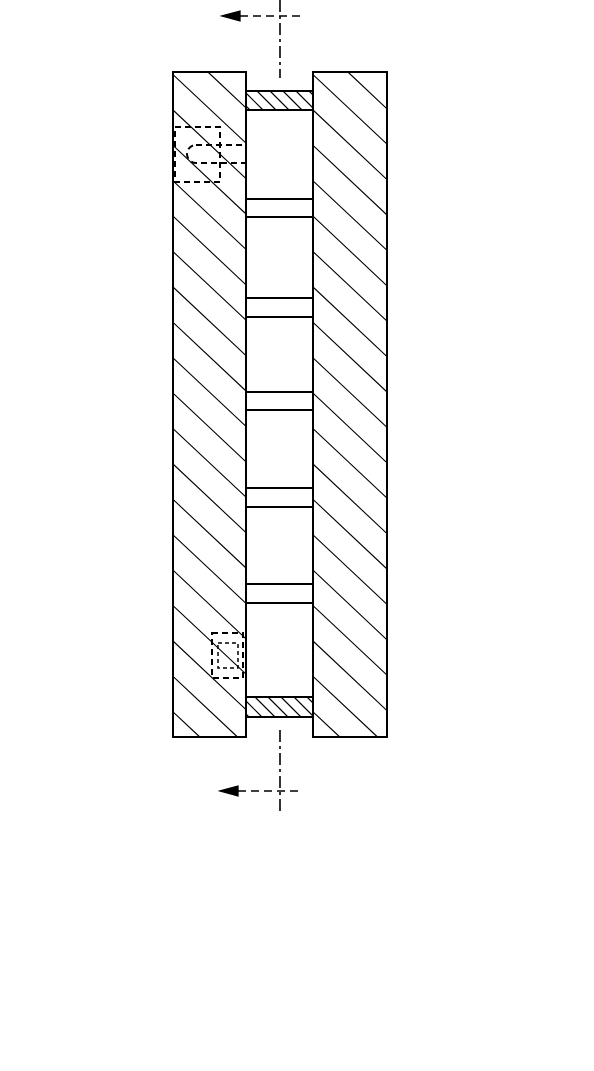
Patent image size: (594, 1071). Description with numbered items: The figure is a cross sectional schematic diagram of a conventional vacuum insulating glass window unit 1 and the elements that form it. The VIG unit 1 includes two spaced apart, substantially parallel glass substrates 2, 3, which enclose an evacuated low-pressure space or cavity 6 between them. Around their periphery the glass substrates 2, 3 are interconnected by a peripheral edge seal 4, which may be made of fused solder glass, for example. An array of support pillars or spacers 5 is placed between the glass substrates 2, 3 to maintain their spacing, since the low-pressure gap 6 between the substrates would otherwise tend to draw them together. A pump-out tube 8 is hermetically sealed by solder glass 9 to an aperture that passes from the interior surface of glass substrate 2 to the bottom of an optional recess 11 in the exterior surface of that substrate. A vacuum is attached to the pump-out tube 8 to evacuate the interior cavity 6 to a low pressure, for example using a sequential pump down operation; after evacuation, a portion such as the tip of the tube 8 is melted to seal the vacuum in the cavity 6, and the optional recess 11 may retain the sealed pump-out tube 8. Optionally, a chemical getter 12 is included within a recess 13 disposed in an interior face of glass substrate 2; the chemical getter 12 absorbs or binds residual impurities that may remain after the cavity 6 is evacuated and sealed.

The VIG window unit 1 is at (398, 160).
The glass substrate 2 is at (172, 457).
The glass substrate 3 is at (357, 330).
The peripheral edge seal 4 is at (293, 97).
The support pillars/spacers 5 is at (288, 598).
The evacuated low-pressure space/cavity 6 is at (263, 532).
The pump-out tube 8 is at (185, 156).
The solder glass 9 is at (215, 138).
The recess 11 is at (190, 182).
The chemical getter 12 is at (228, 652).
The recess 13 is at (218, 682).